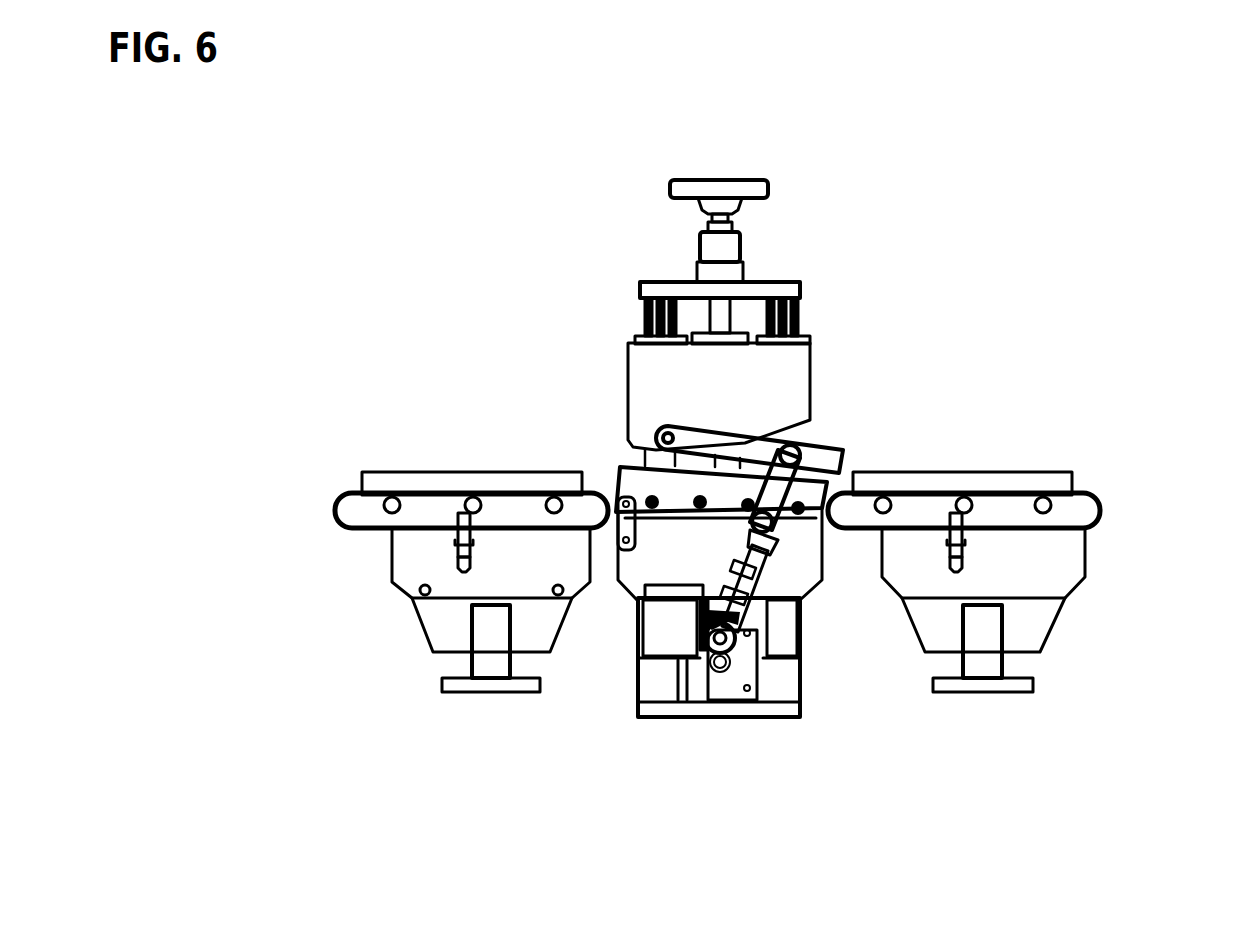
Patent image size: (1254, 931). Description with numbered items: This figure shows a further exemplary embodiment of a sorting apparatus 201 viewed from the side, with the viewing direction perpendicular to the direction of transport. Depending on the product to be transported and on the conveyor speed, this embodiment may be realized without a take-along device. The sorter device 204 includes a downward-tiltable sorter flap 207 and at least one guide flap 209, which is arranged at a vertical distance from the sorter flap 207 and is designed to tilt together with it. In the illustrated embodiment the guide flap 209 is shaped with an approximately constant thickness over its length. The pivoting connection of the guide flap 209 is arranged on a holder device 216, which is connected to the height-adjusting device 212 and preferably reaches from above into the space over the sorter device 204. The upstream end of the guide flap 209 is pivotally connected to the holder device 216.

The sorting apparatus 201 is at (893, 205).
The sorter device 204 is at (620, 655).
The sorter flap 207 is at (683, 492).
The guide flap 209 is at (747, 447).
The height-adjusting device 212 is at (646, 238).
The holder device 216 is at (660, 383).